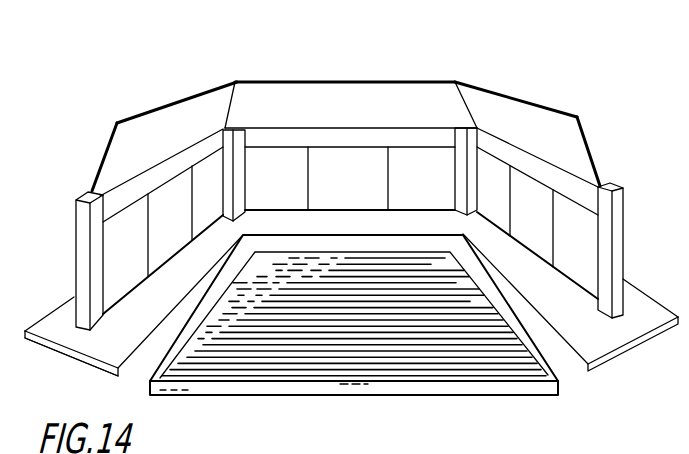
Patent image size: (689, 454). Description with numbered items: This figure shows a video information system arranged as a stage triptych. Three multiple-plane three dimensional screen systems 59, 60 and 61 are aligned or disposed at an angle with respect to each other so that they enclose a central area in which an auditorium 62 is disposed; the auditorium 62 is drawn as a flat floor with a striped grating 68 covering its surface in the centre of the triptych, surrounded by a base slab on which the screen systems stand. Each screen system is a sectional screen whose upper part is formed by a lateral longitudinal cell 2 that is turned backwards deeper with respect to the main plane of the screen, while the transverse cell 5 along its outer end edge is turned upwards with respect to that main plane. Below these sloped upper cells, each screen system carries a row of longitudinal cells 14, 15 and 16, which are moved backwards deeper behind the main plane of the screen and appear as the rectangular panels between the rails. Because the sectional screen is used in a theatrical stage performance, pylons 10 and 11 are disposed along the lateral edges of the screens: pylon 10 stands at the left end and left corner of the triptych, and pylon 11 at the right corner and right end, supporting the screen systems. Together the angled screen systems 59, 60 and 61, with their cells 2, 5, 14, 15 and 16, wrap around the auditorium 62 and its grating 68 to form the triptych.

The longitudinal cell 2 is at (164, 170).
The transverse cell 5 is at (117, 157).
The pylon 10 is at (92, 259).
The pylon 11 is at (462, 175).
The longitudinal cell 14 is at (122, 283).
The longitudinal cell 15 is at (168, 248).
The longitudinal cell 16 is at (207, 218).
The multiple-plane three dimensional screen system 59 is at (134, 114).
The multiple-plane three dimensional screen system 60 is at (320, 80).
The multiple-plane three dimensional screen system 61 is at (565, 107).
The auditorium 62 is at (482, 365).
The grating 68 is at (354, 353).